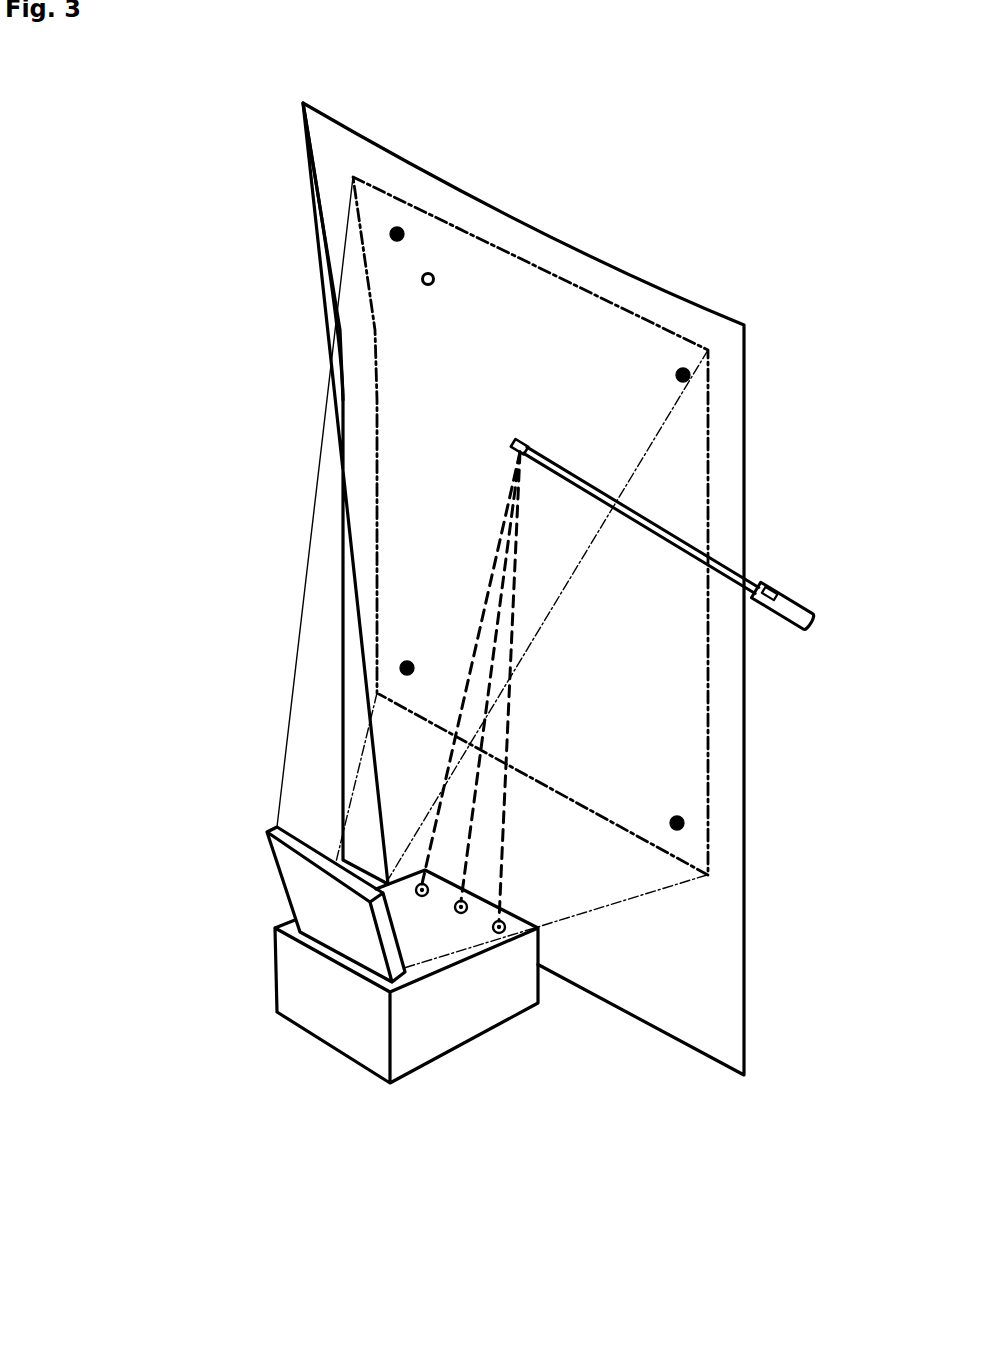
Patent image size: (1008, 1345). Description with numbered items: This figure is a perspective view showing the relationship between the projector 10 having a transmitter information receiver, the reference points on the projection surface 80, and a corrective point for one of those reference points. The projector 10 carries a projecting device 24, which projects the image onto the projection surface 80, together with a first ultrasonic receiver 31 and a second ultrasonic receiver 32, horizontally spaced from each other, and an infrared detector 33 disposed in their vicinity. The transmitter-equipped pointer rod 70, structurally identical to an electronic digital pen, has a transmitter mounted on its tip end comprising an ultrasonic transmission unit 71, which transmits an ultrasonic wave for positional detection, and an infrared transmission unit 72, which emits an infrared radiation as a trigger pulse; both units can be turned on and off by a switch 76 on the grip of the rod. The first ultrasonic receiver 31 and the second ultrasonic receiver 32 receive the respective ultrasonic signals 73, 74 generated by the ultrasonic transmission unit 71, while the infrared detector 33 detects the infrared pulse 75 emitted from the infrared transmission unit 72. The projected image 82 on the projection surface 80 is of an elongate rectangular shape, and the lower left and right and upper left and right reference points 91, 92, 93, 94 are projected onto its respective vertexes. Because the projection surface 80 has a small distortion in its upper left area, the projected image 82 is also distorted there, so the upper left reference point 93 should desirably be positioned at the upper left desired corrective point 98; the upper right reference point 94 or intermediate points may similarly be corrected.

The projector 10 is at (315, 992).
The projecting device 24 is at (298, 902).
The first ultrasonic receiver 31 is at (499, 933).
The second ultrasonic receiver 32 is at (422, 897).
The infrared detector 33 is at (461, 913).
The transmitter-equipped pointer rod 70 is at (683, 537).
The ultrasonic transmission unit 71 is at (511, 443).
The infrared transmission unit 72 is at (514, 449).
The ultrasonic signal 73 is at (512, 588).
The ultrasonic signal 74 is at (478, 627).
The infrared pulse 75 is at (497, 625).
The switch 76 is at (774, 593).
The projection surface 80 is at (633, 297).
The projected image 82 is at (520, 300).
The lower left reference point 91 is at (401, 668).
The lower right reference point 92 is at (683, 823).
The upper left reference point 93 is at (397, 228).
The upper right reference point 94 is at (684, 370).
The upper left desired corrective point 98 is at (428, 273).